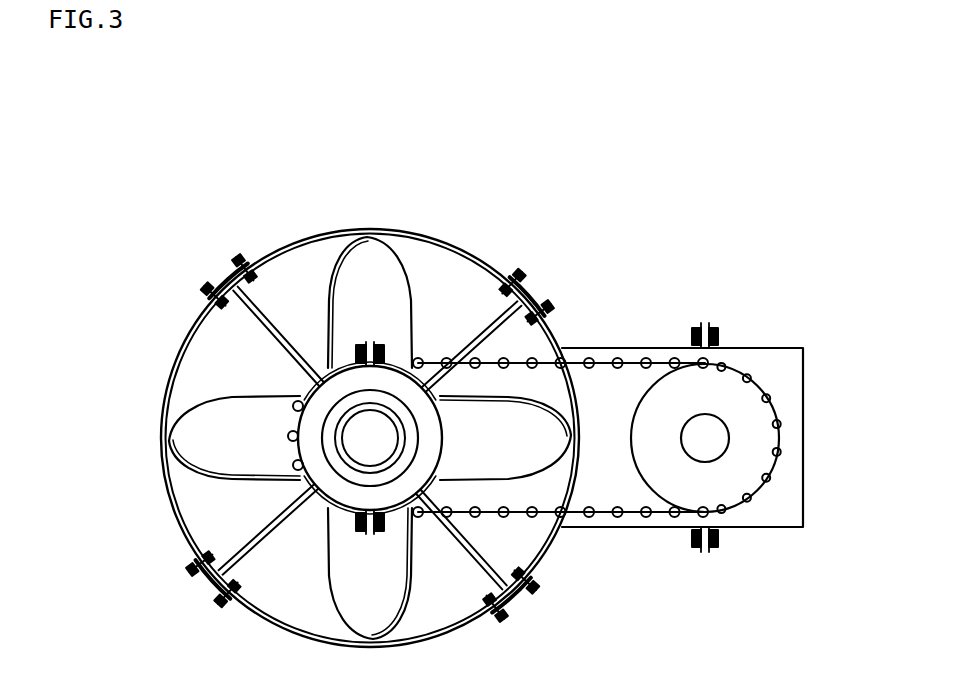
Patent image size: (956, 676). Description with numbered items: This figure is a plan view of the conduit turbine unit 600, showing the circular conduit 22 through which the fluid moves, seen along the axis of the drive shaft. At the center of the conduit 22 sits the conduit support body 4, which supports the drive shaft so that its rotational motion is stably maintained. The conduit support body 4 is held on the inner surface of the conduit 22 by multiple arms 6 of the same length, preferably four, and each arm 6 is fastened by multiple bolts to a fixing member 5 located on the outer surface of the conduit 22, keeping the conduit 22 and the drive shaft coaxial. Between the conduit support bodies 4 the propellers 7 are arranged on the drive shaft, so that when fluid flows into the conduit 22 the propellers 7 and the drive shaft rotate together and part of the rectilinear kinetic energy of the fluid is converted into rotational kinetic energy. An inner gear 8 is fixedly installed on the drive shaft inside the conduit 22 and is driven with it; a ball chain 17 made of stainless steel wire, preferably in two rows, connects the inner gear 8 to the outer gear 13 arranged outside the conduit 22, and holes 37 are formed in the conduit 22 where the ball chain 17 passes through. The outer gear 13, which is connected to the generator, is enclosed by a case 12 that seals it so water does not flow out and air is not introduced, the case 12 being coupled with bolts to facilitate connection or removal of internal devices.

The conduit turbine unit 600 is at (138, 307).
The conduit 22 is at (305, 234).
The fixing member 5 is at (232, 280).
The arm 6 is at (273, 338).
The propeller 7 is at (390, 270).
The conduit support body 4 is at (320, 468).
The inner gear 8 is at (293, 423).
The ball chain 17 is at (593, 353).
The hole 37 is at (565, 527).
The case 12 is at (773, 347).
The outer gear 13 is at (752, 457).